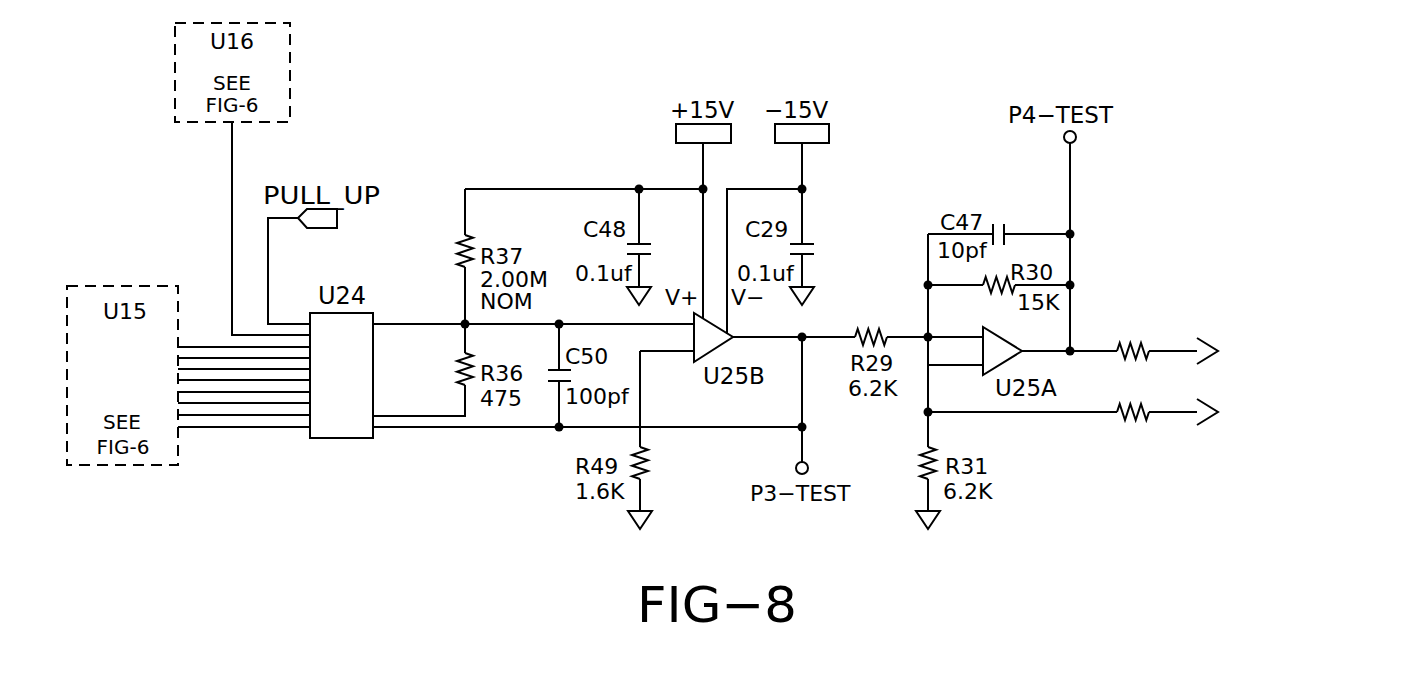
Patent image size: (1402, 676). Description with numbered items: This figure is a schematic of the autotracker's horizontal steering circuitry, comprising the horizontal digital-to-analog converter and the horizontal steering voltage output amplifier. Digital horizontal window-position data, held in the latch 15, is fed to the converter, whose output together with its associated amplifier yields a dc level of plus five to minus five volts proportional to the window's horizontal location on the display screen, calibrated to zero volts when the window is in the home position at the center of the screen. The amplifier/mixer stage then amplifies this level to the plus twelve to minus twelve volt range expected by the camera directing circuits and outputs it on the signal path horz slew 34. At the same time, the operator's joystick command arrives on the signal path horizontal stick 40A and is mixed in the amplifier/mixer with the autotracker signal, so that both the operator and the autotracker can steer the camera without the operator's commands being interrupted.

The signal path horz slew 34 is at (1178, 350).
The signal path horizontal stick 40A is at (1178, 412).
The connection from U16 to U24 15 is at (271, 228).